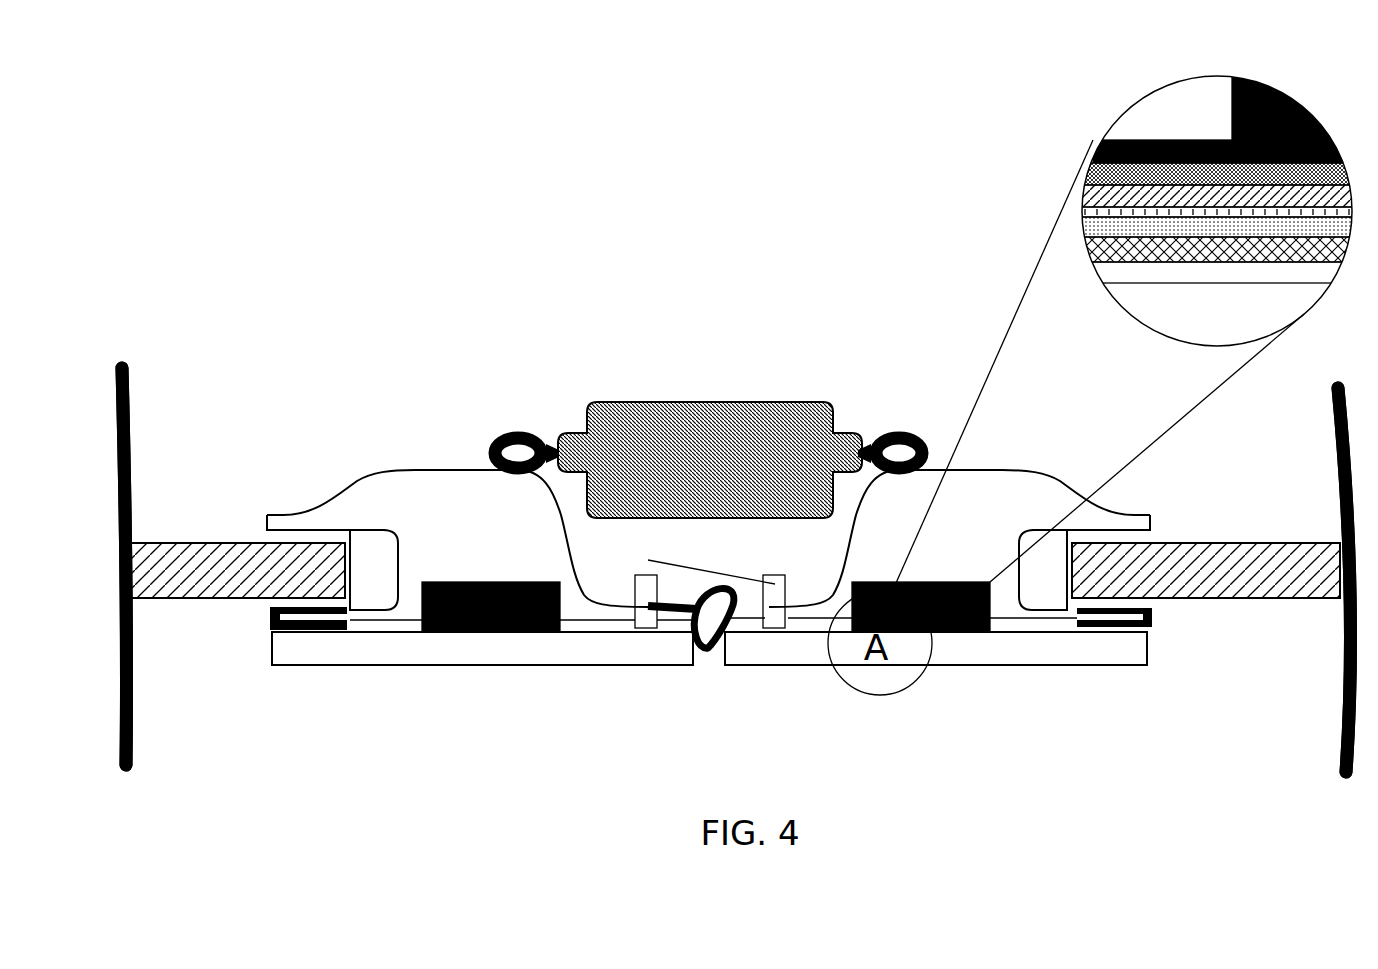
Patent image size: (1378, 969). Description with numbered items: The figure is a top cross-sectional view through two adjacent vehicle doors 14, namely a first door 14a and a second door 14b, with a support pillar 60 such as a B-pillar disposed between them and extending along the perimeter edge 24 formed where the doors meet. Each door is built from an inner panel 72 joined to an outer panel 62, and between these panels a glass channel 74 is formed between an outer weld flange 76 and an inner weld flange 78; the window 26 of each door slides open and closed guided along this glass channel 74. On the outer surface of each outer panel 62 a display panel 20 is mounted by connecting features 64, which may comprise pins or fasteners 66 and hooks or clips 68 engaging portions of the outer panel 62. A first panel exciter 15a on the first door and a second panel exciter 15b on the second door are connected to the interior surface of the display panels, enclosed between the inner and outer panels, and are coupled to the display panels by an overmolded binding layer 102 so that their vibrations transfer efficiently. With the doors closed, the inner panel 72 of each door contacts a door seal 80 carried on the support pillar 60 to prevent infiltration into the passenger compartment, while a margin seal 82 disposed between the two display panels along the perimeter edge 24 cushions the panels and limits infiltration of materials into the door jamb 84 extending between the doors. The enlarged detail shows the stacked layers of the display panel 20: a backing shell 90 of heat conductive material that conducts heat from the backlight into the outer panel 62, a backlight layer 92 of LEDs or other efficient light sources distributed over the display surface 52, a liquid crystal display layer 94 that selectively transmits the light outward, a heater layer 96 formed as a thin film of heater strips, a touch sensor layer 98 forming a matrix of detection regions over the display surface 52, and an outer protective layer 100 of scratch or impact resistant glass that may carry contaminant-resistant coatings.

The door 14 is at (736, 575).
The first door 14a is at (267, 715).
The second door 14b is at (1100, 706).
The first panel exciter 15a is at (492, 581).
The second panel exciter 15b is at (919, 581).
The display panel 20 is at (1144, 114).
The perimeter edge 24 is at (707, 668).
The window 26 is at (153, 582).
The display surface 52 is at (534, 664).
The support pillar 60 is at (688, 474).
The outer panel 62 is at (377, 624).
The connecting feature 64 is at (270, 622).
The pin or fastener 66 is at (699, 577).
The hook or clip 68 is at (746, 635).
The inner panel 72 is at (433, 470).
The glass channel 74 is at (368, 580).
The outer weld flange 76 is at (313, 620).
The inner weld flange 78 is at (285, 514).
The door seal 80 is at (508, 433).
The margin seal 82 is at (712, 652).
The door jamb 84 is at (688, 557).
The backing shell 90 is at (1093, 170).
The backlight layer 92 is at (1093, 197).
The liquid crystal display layer 94 is at (1085, 212).
The heater layer 96 is at (1088, 229).
The touch sensor layer 98 is at (1097, 255).
The protective layer 100 is at (1130, 270).
The overmolded binding layer 102 is at (1093, 146).